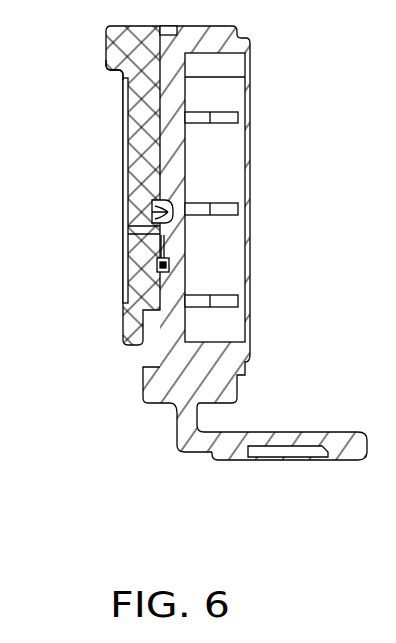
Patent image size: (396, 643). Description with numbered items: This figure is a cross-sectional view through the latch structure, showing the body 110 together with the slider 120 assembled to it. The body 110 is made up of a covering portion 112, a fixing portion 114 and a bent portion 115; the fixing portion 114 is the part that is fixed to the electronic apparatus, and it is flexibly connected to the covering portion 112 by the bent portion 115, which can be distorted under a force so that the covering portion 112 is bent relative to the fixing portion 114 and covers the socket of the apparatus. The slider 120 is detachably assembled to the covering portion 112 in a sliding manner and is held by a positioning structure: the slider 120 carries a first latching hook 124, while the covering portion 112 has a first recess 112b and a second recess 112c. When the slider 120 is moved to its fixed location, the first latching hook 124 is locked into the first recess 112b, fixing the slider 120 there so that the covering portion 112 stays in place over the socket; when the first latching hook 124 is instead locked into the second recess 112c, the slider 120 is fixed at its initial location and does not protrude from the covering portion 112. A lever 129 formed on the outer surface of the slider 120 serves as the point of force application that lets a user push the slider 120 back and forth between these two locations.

The body 110 is at (193, 257).
The covering portion 112 is at (194, 214).
The first recess 112b is at (150, 230).
The second recess 112c is at (152, 270).
The fixing portion 114 is at (230, 453).
The bent portion 115 is at (183, 443).
The slider 120 is at (130, 148).
The first latching hook 124 is at (157, 211).
The lever 129 is at (116, 72).